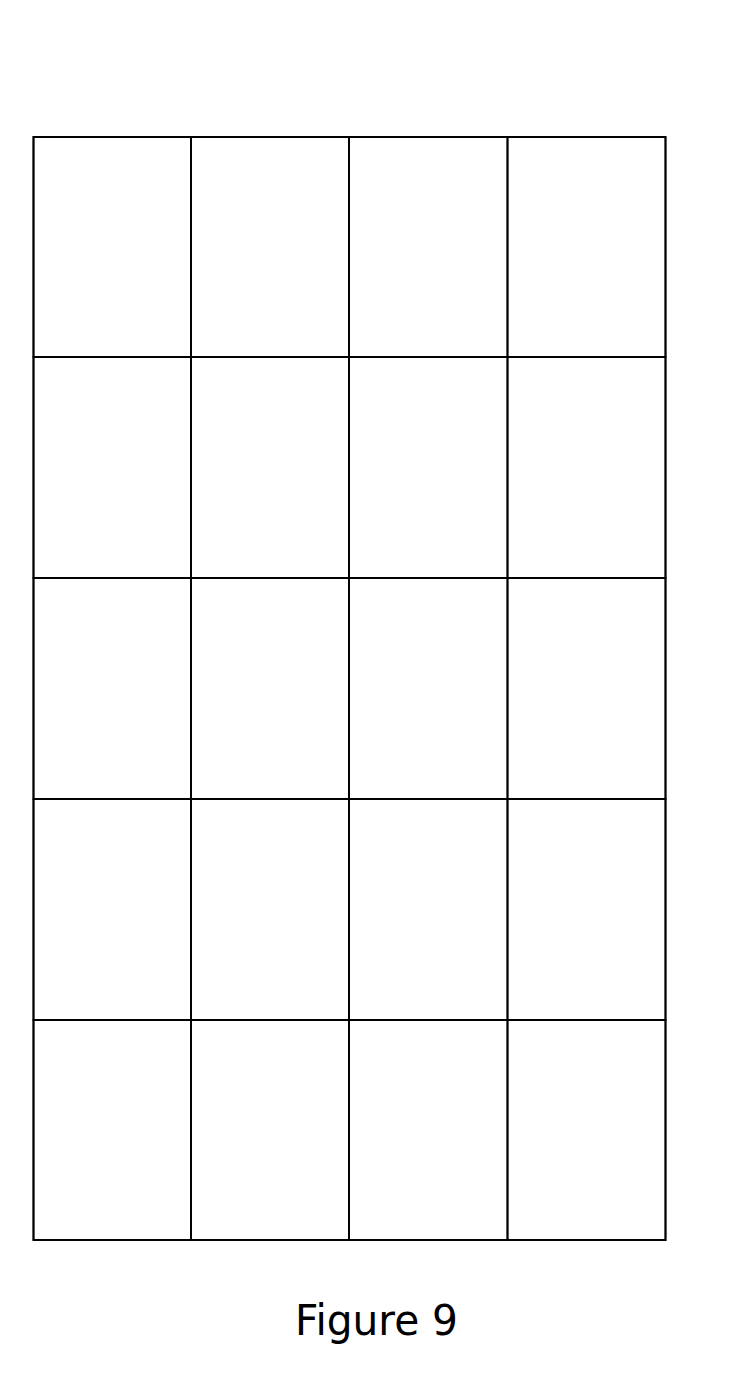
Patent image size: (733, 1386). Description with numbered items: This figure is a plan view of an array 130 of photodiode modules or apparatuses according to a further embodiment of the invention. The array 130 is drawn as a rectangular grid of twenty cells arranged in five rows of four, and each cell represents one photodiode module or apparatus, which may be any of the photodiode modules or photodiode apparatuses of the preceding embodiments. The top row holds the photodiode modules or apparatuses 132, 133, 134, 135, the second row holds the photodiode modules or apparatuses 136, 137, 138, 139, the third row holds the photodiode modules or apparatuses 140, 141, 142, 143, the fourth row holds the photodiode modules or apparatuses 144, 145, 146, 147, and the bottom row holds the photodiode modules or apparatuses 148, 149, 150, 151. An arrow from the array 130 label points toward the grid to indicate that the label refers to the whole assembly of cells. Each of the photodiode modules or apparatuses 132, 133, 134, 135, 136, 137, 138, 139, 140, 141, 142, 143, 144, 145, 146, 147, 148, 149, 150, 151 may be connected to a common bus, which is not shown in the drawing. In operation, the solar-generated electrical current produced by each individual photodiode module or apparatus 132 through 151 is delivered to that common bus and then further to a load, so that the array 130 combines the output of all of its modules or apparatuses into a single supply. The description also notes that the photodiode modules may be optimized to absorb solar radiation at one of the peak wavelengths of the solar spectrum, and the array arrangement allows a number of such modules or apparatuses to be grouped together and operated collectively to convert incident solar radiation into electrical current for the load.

The array 130 is at (535, 100).
The photodiode module or apparatus 132 is at (140, 251).
The photodiode module or apparatus 133 is at (298, 252).
The photodiode module or apparatus 134 is at (455, 247).
The photodiode module or apparatus 135 is at (598, 247).
The photodiode module or apparatus 136 is at (140, 480).
The photodiode module or apparatus 137 is at (273, 480).
The photodiode module or apparatus 138 is at (440, 480).
The photodiode module or apparatus 139 is at (605, 480).
The photodiode module or apparatus 140 is at (125, 707).
The photodiode module or apparatus 141 is at (282, 707).
The photodiode module or apparatus 142 is at (455, 707).
The photodiode module or apparatus 143 is at (597, 707).
The photodiode module or apparatus 144 is at (125, 929).
The photodiode module or apparatus 145 is at (282, 929).
The photodiode module or apparatus 146 is at (440, 929).
The photodiode module or apparatus 147 is at (590, 929).
The photodiode module or apparatus 148 is at (125, 1146).
The photodiode module or apparatus 149 is at (290, 1151).
The photodiode module or apparatus 150 is at (448, 1149).
The photodiode module or apparatus 151 is at (605, 1149).